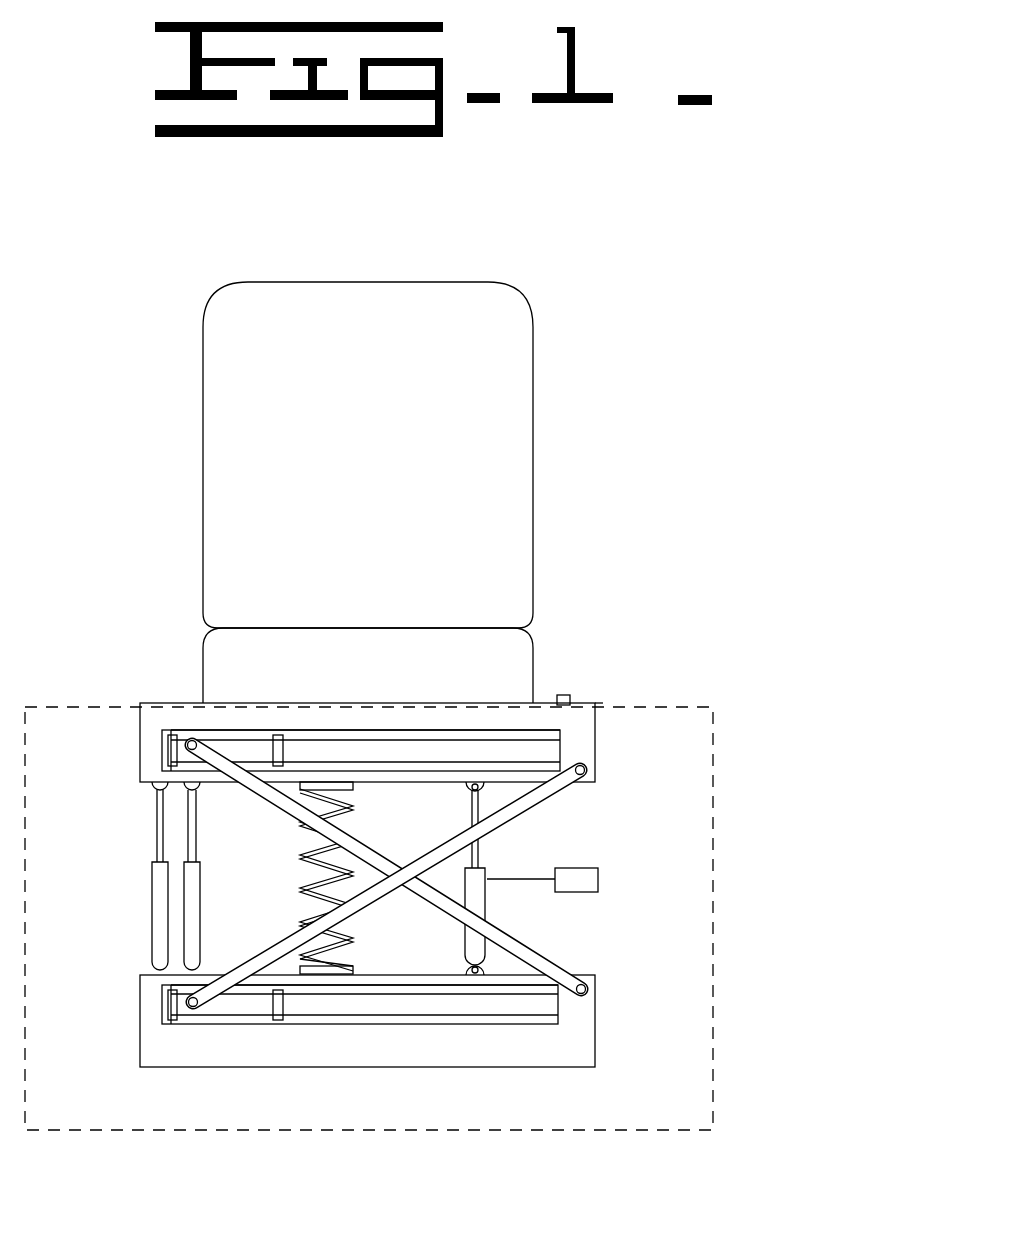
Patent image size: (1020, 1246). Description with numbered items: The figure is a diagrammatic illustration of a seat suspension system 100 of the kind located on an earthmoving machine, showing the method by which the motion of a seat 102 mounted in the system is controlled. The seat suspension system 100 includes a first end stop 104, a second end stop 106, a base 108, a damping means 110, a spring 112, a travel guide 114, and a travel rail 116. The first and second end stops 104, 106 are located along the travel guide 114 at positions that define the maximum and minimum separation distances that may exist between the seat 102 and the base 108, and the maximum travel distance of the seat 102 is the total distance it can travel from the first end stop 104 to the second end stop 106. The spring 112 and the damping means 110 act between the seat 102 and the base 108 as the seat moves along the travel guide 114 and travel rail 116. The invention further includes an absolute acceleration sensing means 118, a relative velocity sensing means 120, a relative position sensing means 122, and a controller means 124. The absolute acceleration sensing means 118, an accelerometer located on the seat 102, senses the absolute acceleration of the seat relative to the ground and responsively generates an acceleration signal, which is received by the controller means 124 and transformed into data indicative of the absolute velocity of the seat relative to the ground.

The seat suspension system 100 is at (713, 753).
The seat 102 is at (593, 728).
The first end stop 104 is at (168, 750).
The second end stop 106 is at (290, 730).
The base 108 is at (590, 1047).
The damping means 110 is at (487, 908).
The spring 112 is at (340, 955).
The travel guide 114 is at (290, 948).
The travel rail 116 is at (407, 727).
The absolute acceleration sensing means 118 is at (572, 698).
The relative velocity sensing means 120 is at (188, 873).
The relative position sensing means 122 is at (157, 803).
The controller means 124 is at (598, 880).